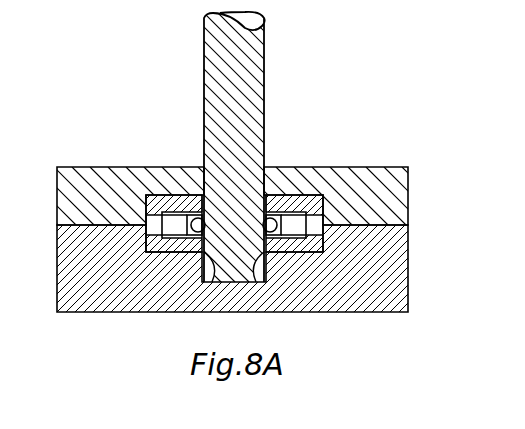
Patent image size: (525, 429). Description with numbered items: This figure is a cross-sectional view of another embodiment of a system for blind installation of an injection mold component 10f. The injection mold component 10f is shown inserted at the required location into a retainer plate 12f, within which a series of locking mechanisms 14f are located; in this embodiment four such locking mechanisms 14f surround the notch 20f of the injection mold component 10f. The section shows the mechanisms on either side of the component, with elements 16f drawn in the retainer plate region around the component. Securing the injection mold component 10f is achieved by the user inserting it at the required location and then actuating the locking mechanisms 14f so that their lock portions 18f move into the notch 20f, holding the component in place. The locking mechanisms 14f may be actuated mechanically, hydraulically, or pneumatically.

The injection mold component 10f is at (220, 65).
The retainer plate 12f is at (102, 183).
The locking mechanism 14f is at (310, 194).
The seal carrier insert 16f is at (178, 223).
The lock portion 18f is at (196, 200).
The notch 20f is at (185, 238).